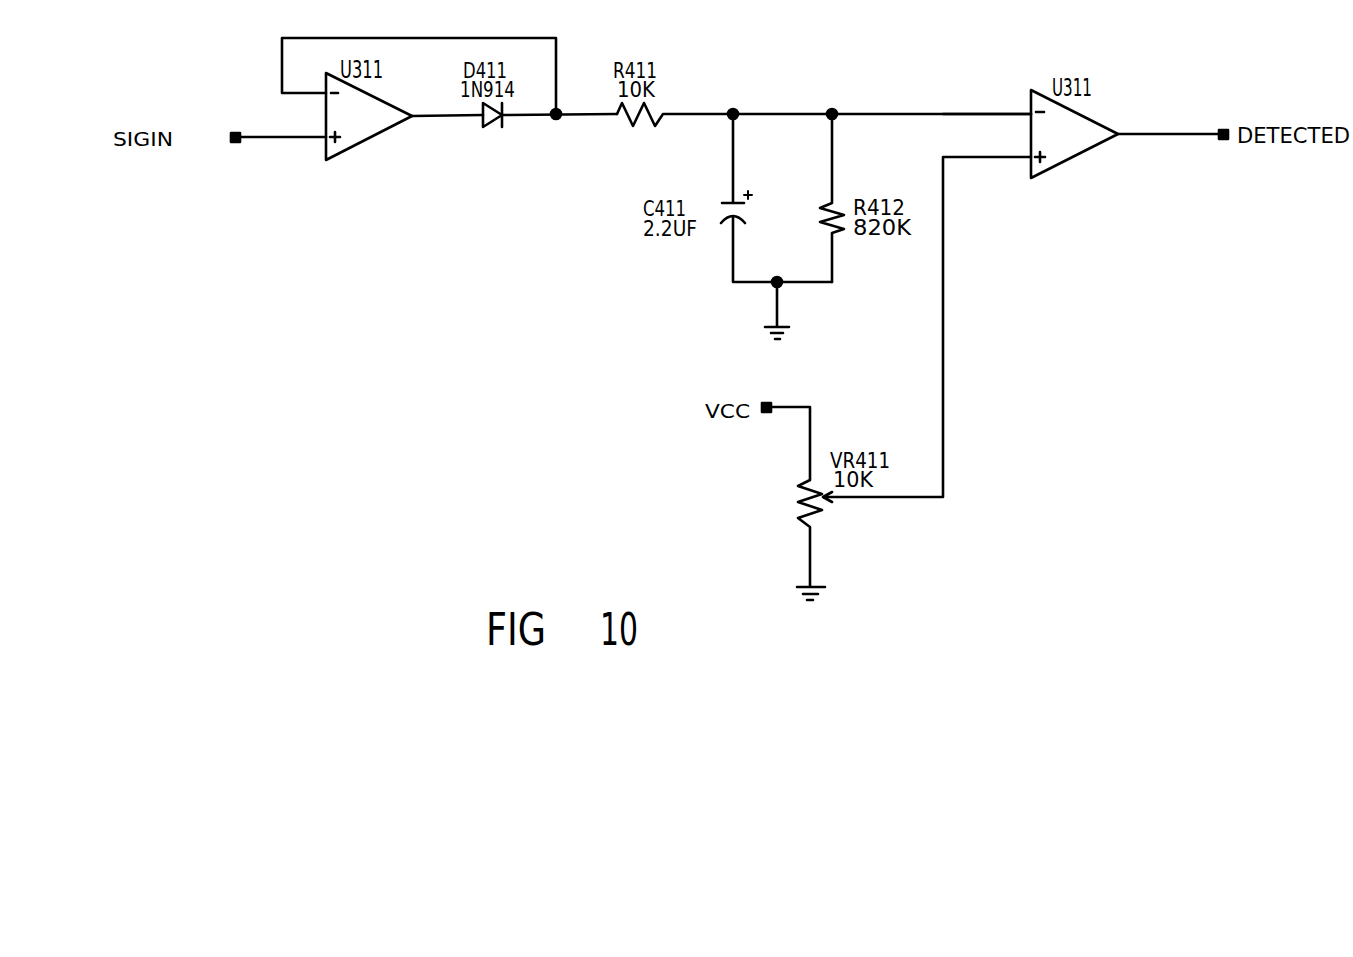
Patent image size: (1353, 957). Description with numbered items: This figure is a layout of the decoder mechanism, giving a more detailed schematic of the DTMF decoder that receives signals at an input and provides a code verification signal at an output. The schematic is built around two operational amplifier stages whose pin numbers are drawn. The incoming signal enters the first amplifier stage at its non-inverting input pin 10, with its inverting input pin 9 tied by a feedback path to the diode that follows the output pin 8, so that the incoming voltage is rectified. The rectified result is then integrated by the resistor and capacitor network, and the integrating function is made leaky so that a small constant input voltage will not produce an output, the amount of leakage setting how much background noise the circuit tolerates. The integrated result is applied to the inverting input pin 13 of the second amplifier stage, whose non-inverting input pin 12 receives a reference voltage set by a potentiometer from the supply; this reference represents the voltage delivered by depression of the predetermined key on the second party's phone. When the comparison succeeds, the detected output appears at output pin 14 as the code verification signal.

The output pin of first op-amp U311 8 is at (447, 107).
The inverting input pin of first op-amp U311 9 is at (419, 76).
The non-inverting input pin of first op-amp U311 10 is at (283, 124).
The non-inverting input pin of second op-amp U311 12 is at (927, 316).
The inverting input pin of second op-amp U311 13 is at (987, 98).
The output pin of second op-amp U311 14 is at (1170, 120).